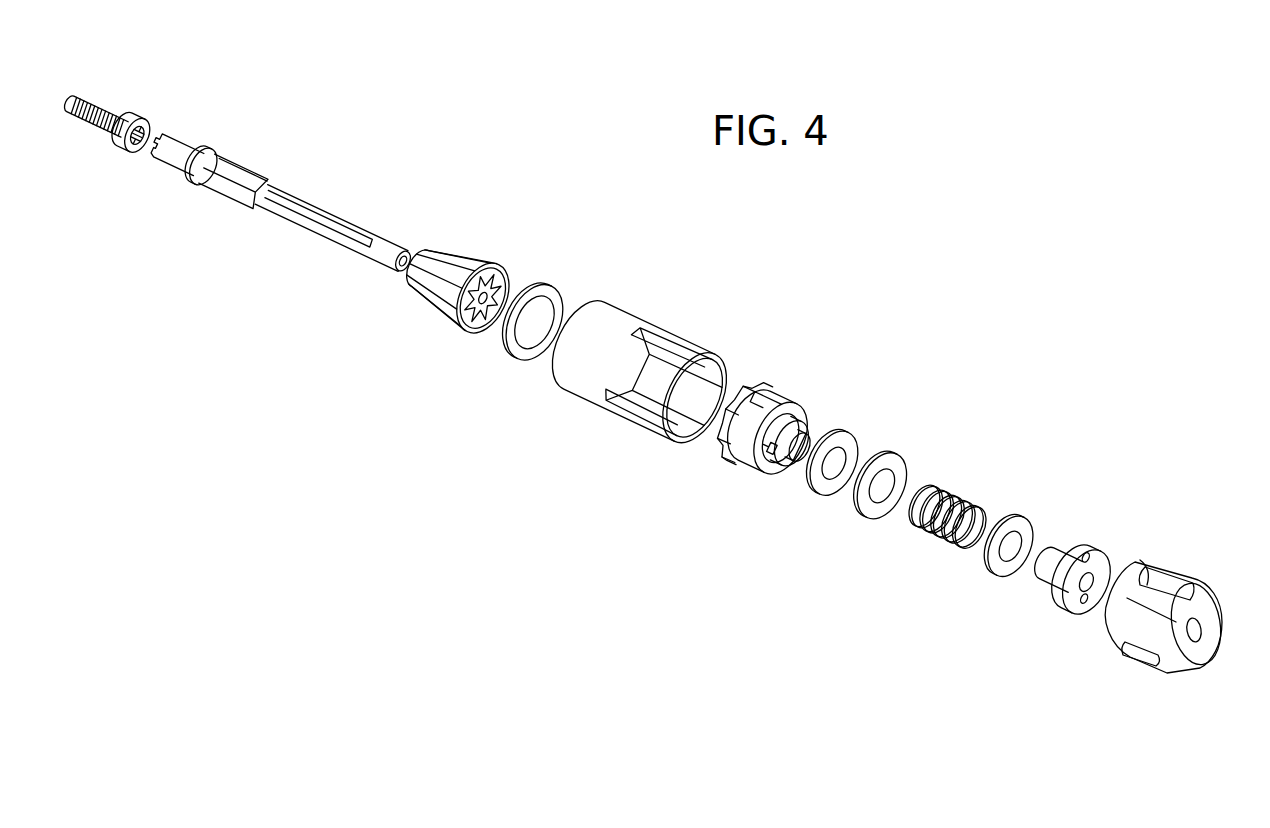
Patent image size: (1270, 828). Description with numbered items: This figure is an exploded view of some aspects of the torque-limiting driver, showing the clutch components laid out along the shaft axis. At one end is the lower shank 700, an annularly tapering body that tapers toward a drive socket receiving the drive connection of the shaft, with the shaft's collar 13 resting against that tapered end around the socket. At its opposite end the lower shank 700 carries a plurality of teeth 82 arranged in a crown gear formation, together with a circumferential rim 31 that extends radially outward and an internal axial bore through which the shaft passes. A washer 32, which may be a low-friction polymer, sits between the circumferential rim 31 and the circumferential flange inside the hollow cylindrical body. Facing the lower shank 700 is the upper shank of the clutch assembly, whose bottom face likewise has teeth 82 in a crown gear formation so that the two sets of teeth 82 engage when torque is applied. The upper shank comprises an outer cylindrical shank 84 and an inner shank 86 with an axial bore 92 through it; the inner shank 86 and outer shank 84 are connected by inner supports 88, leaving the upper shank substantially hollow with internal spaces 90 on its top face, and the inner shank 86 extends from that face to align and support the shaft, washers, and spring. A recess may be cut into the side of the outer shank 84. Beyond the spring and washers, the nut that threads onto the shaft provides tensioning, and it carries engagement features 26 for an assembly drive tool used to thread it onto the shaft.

The lower shank 700 is at (440, 307).
The circumferential rim 31 is at (466, 323).
The teeth 82 is at (493, 270).
The washer 32 is at (521, 357).
The outer cylindrical shank 84 is at (788, 449).
The inner supports 88 is at (754, 418).
The internal spaces 90 is at (800, 418).
The axial bore 92 is at (808, 436).
The inner shank 86 is at (783, 450).
The engagement features 26 is at (1085, 602).
The collar 13 is at (1196, 633).